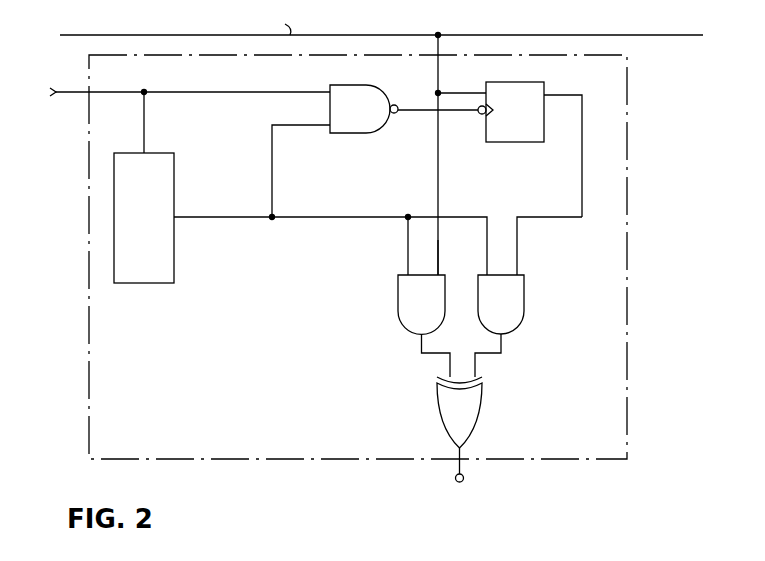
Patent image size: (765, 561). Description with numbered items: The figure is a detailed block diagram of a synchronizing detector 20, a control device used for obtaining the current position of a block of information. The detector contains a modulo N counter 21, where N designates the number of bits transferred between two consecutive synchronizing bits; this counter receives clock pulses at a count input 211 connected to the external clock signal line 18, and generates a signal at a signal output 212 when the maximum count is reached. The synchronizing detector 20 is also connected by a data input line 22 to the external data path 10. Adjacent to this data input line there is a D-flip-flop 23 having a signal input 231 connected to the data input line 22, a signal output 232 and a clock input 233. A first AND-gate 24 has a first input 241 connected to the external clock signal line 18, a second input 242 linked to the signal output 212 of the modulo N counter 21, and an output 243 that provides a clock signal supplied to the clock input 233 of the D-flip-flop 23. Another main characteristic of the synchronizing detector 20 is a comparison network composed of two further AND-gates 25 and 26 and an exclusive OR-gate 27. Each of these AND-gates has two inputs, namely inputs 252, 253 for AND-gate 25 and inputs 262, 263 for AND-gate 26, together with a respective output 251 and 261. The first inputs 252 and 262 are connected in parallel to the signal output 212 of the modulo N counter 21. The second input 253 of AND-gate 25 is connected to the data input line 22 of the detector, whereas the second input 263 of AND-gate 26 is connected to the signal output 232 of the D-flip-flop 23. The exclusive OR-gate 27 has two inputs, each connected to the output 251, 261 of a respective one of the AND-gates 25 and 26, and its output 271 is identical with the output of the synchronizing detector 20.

The external data path 10 is at (603, 35).
The external clock signal line 18 is at (68, 93).
The synchronizing detector 20 is at (592, 447).
The modulo N counter 21 is at (160, 274).
The count input 211 is at (144, 130).
The signal output 212 is at (213, 218).
The data input line 22 is at (438, 73).
The D-flip-flop 23 is at (533, 123).
The signal input 231 is at (466, 93).
The signal output 232 is at (569, 95).
The clock input 233 is at (480, 114).
The first AND-gate 24 is at (369, 93).
The first input 241 is at (280, 92).
The second input 242 is at (292, 126).
The output 243 is at (408, 111).
The AND-gate 25 is at (412, 304).
The output 251 is at (421, 347).
The first input 252 is at (408, 259).
The second input 253 is at (440, 229).
The AND-gate 26 is at (510, 304).
The output 261 is at (501, 343).
The first input 262 is at (487, 259).
The second input 263 is at (517, 229).
The exclusive OR-gate 27 is at (450, 410).
The output 271 is at (456, 468).